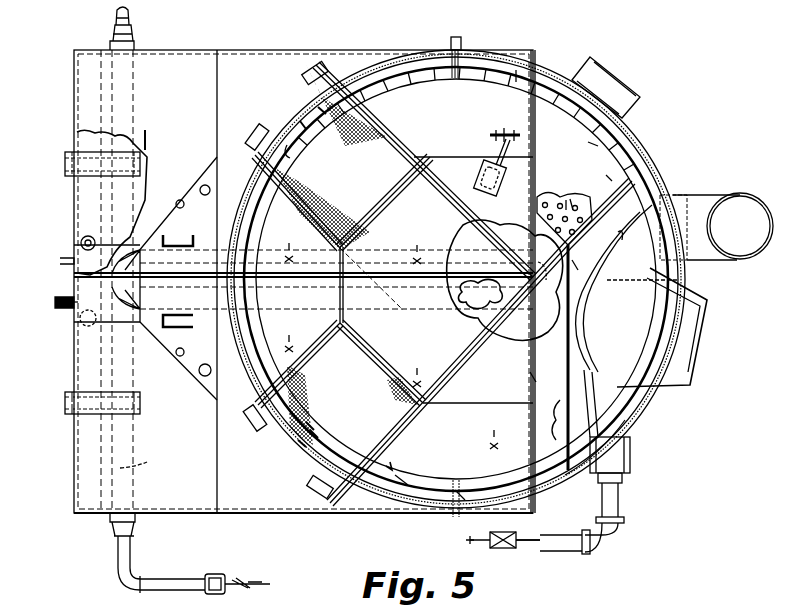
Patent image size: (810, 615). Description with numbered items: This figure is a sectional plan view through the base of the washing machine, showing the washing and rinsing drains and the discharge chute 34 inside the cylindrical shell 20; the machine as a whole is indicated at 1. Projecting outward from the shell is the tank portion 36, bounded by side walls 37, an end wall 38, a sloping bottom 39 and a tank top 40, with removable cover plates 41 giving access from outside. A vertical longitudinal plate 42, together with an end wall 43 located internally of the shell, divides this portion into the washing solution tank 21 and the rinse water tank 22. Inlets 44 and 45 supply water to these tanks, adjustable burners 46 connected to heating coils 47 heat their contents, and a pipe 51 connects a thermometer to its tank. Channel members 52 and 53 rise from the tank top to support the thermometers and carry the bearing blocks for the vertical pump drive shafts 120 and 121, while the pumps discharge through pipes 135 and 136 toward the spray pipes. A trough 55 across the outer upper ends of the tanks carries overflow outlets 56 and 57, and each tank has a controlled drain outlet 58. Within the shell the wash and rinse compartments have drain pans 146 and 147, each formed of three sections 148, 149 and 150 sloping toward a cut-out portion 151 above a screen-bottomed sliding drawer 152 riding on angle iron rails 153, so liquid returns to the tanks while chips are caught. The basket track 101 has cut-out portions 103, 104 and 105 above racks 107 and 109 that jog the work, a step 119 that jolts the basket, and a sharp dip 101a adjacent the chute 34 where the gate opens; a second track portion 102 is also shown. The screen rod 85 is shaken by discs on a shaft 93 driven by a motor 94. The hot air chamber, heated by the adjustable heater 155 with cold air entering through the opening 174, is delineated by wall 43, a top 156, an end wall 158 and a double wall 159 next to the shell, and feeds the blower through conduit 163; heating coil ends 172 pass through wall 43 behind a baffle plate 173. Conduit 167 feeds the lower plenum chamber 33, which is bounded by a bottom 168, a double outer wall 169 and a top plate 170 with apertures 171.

The drum 1 is at (456, 279).
The cylindrical shell 20 is at (670, 172).
The washing solution tank 21 is at (523, 328).
The rinse water tank 22 is at (563, 244).
The lower plenum chamber 33 is at (614, 150).
The discharge chute 34 is at (693, 352).
The tank portion 36 is at (144, 484).
The side wall 37 is at (175, 514).
The end wall 38 is at (81, 245).
The sloping bottom 39 is at (60, 260).
The tank top 40 is at (284, 497).
The removable cover plate 41 is at (150, 60).
The vertical longitudinal plate 42 is at (138, 270).
The end wall 43 is at (533, 377).
The inlet 44 is at (466, 541).
The inlet 45 is at (462, 40).
The adjustable burner 46 is at (131, 16).
The heating coil 47 is at (143, 458).
The pipe 51 is at (60, 298).
The channel member 52 is at (188, 237).
The channel member 53 is at (178, 325).
The trough 55 is at (84, 213).
The overflow outlet 56 is at (81, 240).
The overflow outlet 57 is at (79, 319).
The drain outlet 58 is at (65, 164).
The longitudinal rod 85 is at (490, 133).
The shaft 93 is at (496, 152).
The motor 94 is at (478, 172).
The track 101 is at (407, 484).
The dip in track 101a is at (590, 318).
The channel 102 is at (463, 491).
The cut-out portion 103 is at (322, 132).
The cut-out portion 104 is at (293, 158).
The cut-out portion 105 is at (426, 78).
The rack 107 is at (315, 427).
The rack 109 is at (518, 70).
The step or offset 119 is at (640, 215).
The vertical drive shaft 120 is at (178, 355).
The vertical drive shaft 121 is at (180, 209).
The discharge pipe 135 is at (201, 375).
The discharge pipe 136 is at (201, 188).
The drain pan 146 is at (390, 464).
The drain pan 147 is at (441, 95).
The pan section 148 is at (289, 290).
The pan section 149 is at (417, 308).
The pan section 150 is at (484, 432).
The cut-out portion 151 is at (380, 214).
The sliding drawer 152 is at (296, 88).
The angle iron rail 153 is at (518, 304).
The adjustable heater 155 is at (620, 498).
The top 156 is at (570, 250).
The end wall 158 is at (612, 181).
The double wall 159 is at (650, 400).
The conduit 163 is at (752, 190).
The conduit 167 is at (612, 70).
The bottom 168 is at (586, 143).
The double outer wall 169 is at (652, 152).
The top plate 170 is at (547, 198).
The aperture 171 is at (568, 200).
The heating coil end 172 is at (553, 274).
The baffle plate 173 is at (530, 404).
The opening 174 is at (632, 452).